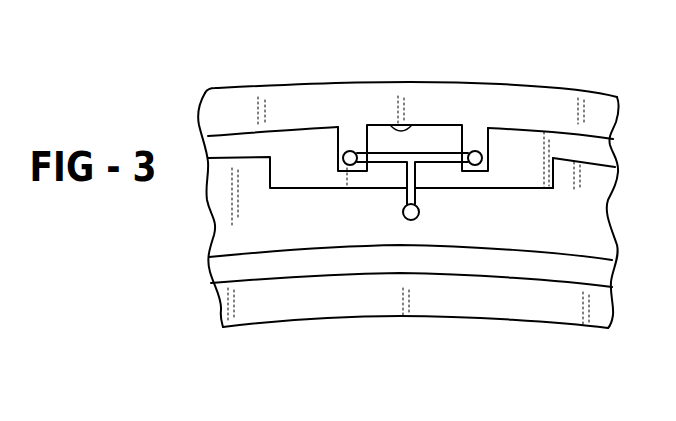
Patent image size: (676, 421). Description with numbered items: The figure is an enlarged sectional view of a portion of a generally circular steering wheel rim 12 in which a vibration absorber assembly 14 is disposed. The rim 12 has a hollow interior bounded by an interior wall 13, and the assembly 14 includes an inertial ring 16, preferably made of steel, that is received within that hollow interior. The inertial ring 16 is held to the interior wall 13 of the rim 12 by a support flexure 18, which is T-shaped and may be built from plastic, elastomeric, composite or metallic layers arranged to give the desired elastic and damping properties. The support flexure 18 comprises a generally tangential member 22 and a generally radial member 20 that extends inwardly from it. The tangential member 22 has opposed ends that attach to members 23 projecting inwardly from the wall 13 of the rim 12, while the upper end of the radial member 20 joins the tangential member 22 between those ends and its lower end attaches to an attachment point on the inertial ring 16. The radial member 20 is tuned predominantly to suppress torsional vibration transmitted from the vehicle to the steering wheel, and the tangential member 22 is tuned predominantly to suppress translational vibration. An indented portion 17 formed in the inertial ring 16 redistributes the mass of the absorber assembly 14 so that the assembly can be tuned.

The steering wheel rim 12 is at (227, 128).
The interior wall 13 is at (413, 125).
The absorber assembly 14 is at (342, 329).
The inertial ring 16 is at (500, 231).
The indented portion 17 is at (555, 198).
The support flexure 18 is at (348, 143).
The radial member 20 is at (394, 200).
The tangential member 22 is at (438, 155).
The projecting member 23 is at (340, 146).